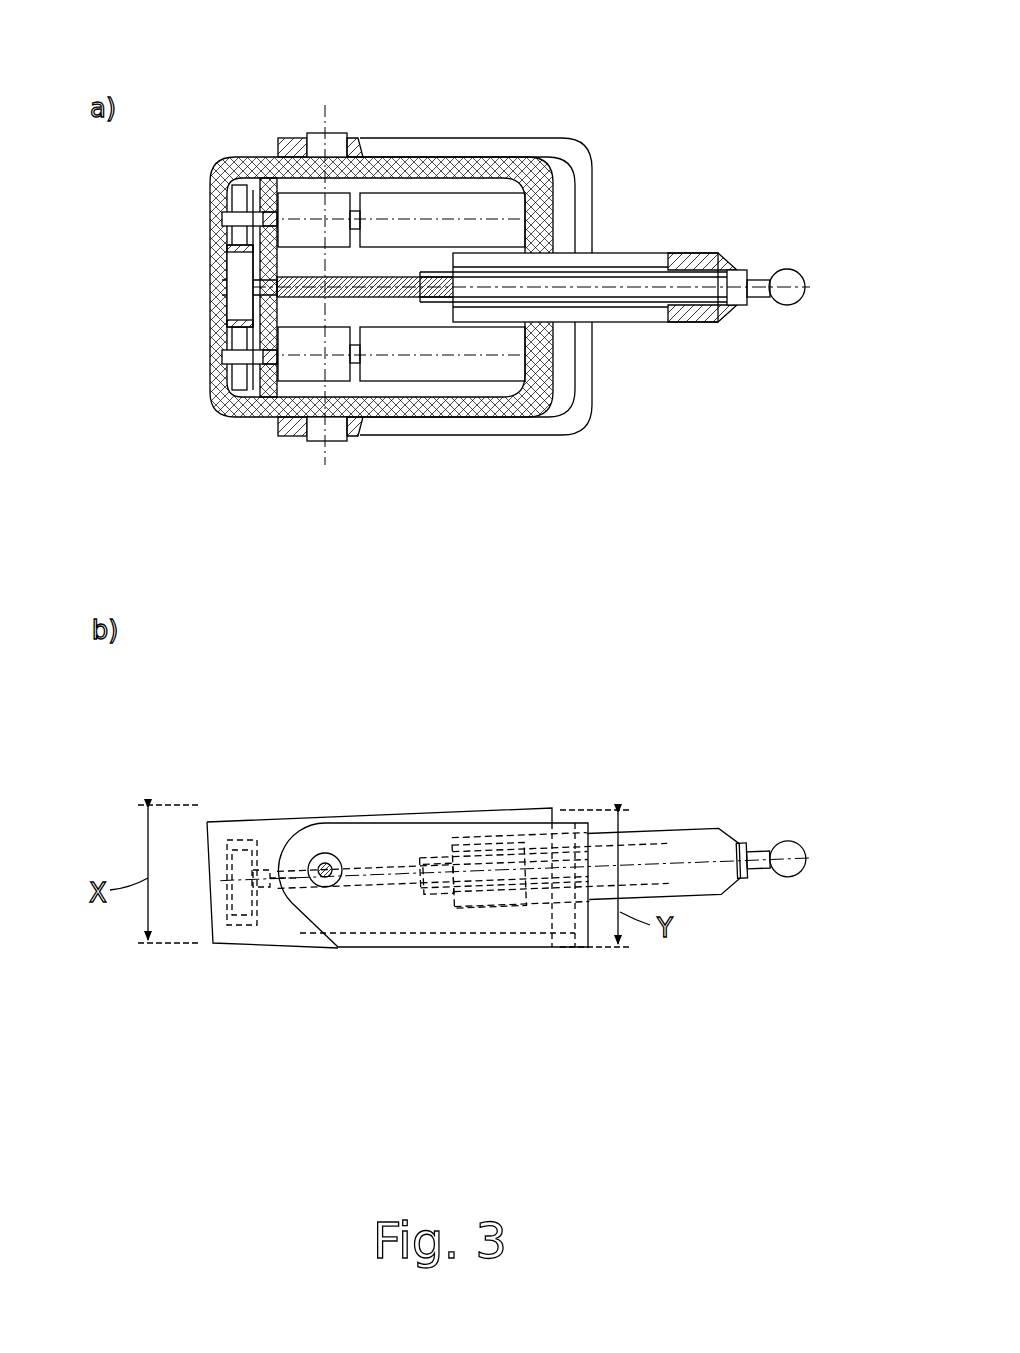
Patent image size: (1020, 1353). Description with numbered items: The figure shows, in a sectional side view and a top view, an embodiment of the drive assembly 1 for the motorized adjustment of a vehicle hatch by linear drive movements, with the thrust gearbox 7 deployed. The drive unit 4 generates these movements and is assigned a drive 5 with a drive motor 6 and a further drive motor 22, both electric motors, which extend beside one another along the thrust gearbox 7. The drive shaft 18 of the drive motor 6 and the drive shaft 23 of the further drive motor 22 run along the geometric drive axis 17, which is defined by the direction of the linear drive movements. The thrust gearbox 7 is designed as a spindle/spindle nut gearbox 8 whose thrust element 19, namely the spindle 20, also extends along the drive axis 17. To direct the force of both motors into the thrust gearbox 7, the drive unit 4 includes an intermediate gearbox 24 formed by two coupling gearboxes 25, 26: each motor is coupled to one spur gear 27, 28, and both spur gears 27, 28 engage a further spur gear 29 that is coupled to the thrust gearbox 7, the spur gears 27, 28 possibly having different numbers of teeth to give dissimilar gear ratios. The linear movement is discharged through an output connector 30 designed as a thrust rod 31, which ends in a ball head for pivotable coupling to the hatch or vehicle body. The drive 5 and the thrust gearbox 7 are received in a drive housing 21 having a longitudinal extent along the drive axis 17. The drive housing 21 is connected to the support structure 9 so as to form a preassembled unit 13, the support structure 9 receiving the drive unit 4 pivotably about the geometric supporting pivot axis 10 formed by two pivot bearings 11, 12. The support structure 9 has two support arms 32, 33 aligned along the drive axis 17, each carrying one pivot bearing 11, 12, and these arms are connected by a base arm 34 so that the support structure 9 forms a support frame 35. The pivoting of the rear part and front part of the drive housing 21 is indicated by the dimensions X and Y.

The drive assembly 1 is at (581, 40).
The drive unit 4 is at (114, 498).
The drive 5 is at (373, 207).
The drive motor 6 is at (373, 220).
The thrust gearbox 7 is at (515, 561).
The spindle/spindle nut gearbox 8 is at (568, 246).
The support structure 9 is at (462, 148).
The geometric supporting pivot axis 10 is at (336, 462).
The pivot bearing 11 is at (340, 133).
The pivot bearing 12 is at (313, 440).
The preassembled unit 13 is at (187, 536).
The geometric drive axis 17 is at (810, 292).
The drive shaft 18 is at (258, 188).
The thrust element 19 is at (379, 432).
The spindle 20 is at (415, 302).
The drive housing 21 is at (398, 430).
The further drive motor 22 is at (408, 347).
The drive shaft 23 is at (256, 375).
The intermediate gearbox 24 is at (155, 298).
The coupling gearbox 25 is at (190, 187).
The coupling gearbox 26 is at (138, 245).
The spur gear 27 is at (212, 182).
The spur gear 28 is at (222, 395).
The further spur gear 29 is at (164, 376).
The output connector 30 is at (658, 537).
The thrust rod 31 is at (732, 262).
The support arm 32 is at (495, 148).
The support arm 33 is at (503, 428).
The base arm 34 is at (585, 390).
The support frame 35 is at (545, 137).